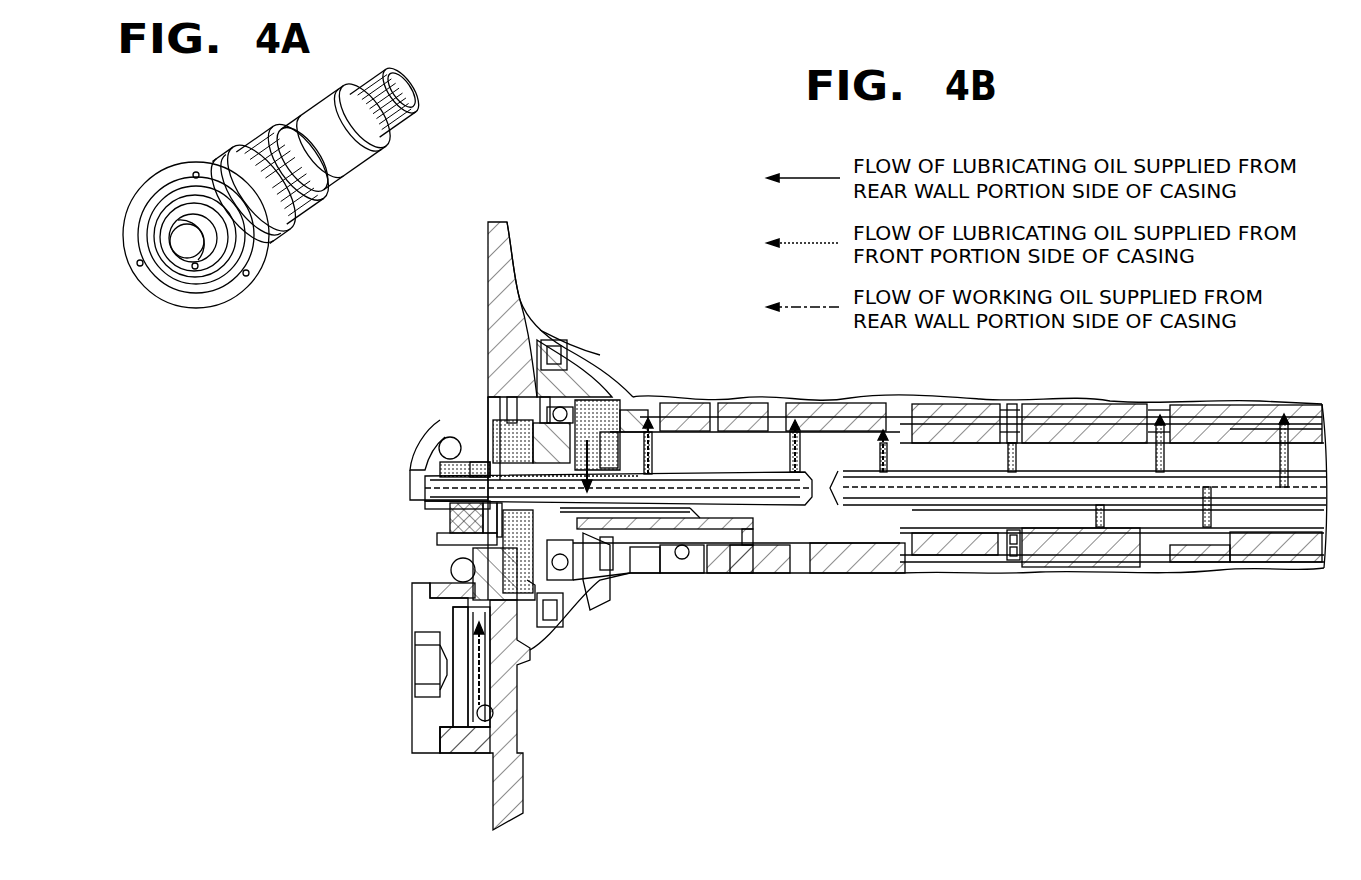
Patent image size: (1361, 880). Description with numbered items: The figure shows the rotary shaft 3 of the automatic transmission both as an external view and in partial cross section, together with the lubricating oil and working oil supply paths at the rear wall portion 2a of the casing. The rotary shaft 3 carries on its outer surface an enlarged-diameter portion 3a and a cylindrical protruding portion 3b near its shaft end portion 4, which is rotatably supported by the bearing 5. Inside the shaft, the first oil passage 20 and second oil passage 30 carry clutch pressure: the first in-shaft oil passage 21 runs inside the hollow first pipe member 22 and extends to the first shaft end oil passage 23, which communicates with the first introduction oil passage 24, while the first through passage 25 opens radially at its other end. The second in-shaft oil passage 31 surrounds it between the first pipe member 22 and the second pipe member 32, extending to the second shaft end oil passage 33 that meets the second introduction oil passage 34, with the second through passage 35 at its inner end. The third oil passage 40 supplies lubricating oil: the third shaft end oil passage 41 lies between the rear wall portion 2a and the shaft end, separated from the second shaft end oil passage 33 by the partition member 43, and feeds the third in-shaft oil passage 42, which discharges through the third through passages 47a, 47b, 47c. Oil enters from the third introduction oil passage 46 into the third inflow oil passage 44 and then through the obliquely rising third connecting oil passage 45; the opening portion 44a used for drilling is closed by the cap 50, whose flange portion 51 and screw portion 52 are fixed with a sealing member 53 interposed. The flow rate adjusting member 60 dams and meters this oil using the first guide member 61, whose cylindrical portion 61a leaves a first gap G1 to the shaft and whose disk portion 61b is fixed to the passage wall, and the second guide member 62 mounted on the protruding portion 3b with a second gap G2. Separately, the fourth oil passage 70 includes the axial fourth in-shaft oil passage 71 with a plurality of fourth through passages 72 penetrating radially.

In FIG. 4B, the rear wall portion 2a is at (500, 312).
In FIG. 4A, the rotary shaft 3 is at (182, 146).
In FIG. 4B, the rotary shaft 3 is at (840, 440).
In FIG. 4A, the enlarged-diameter portion 3a is at (134, 212).
In FIG. 4B, the enlarged-diameter portion 3a is at (597, 443).
In FIG. 4A, the protruding portion 3b is at (140, 240).
In FIG. 4B, the protruding portion 3b is at (455, 500).
In FIG. 4A, the shaft end portion 4 is at (78, 182).
In FIG. 4B, the shaft end portion 4 is at (470, 503).
In FIG. 4B, the bearing 5 is at (550, 615).
In FIG. 4B, the first oil passage 20 is at (613, 483).
In FIG. 4A, the first in-shaft oil passage 21 is at (190, 245).
In FIG. 4B, the first in-shaft oil passage 21 is at (800, 575).
In FIG. 4B, the first pipe member 22 is at (742, 440).
In FIG. 4B, the first shaft end oil passage 23 is at (420, 460).
In FIG. 4B, the first introduction oil passage 24 is at (445, 440).
In FIG. 4B, the first through passage 25 is at (820, 440).
In FIG. 4B, the second oil passage 30 is at (600, 437).
In FIG. 4B, the second in-shaft oil passage 31 is at (587, 453).
In FIG. 4B, the second pipe member 32 is at (623, 440).
In FIG. 4B, the second shaft end oil passage 33 is at (450, 540).
In FIG. 4B, the second introduction oil passage 34 is at (450, 572).
In FIG. 4B, the second through passage 35 is at (670, 433).
In FIG. 4B, the third oil passage 40 is at (512, 605).
In FIG. 4B, the third shaft end oil passage 41 is at (520, 430).
In FIG. 4B, the third in-shaft oil passage 42 is at (682, 560).
In FIG. 4B, the partition member 43 is at (505, 420).
In FIG. 4B, the third inflow oil passage 44 is at (488, 700).
In FIG. 4B, the opening portion 44a is at (427, 593).
In FIG. 4B, the third connecting oil passage 45 is at (460, 610).
In FIG. 4B, the third introduction oil passage 46 is at (492, 722).
In FIG. 4B, the third through passage 47a is at (640, 577).
In FIG. 4B, the third through passage 47b is at (705, 580).
In FIG. 4B, the third through passage 47c is at (760, 580).
In FIG. 4B, the cap 50 is at (445, 712).
In FIG. 4B, the flange portion 51 is at (420, 755).
In FIG. 4B, the screw portion 52 is at (460, 755).
In FIG. 4B, the sealing member 53 is at (430, 755).
In FIG. 4B, the flow rate adjusting member 60 is at (308, 447).
In FIG. 4B, the first guide member 61 is at (460, 470).
In FIG. 4B, the cylindrical portion 61a is at (575, 600).
In FIG. 4B, the disk portion 61b is at (480, 470).
In FIG. 4B, the second guide member 62 is at (430, 478).
In FIG. 4B, the fourth oil passage 70 is at (1275, 676).
In FIG. 4B, the fourth in-shaft oil passage 71 is at (920, 485).
In FIG. 4B, the fourth through passage 72 is at (905, 570).
In FIG. 4B, the first gap G1 is at (580, 582).
In FIG. 4B, the second gap G2 is at (560, 405).